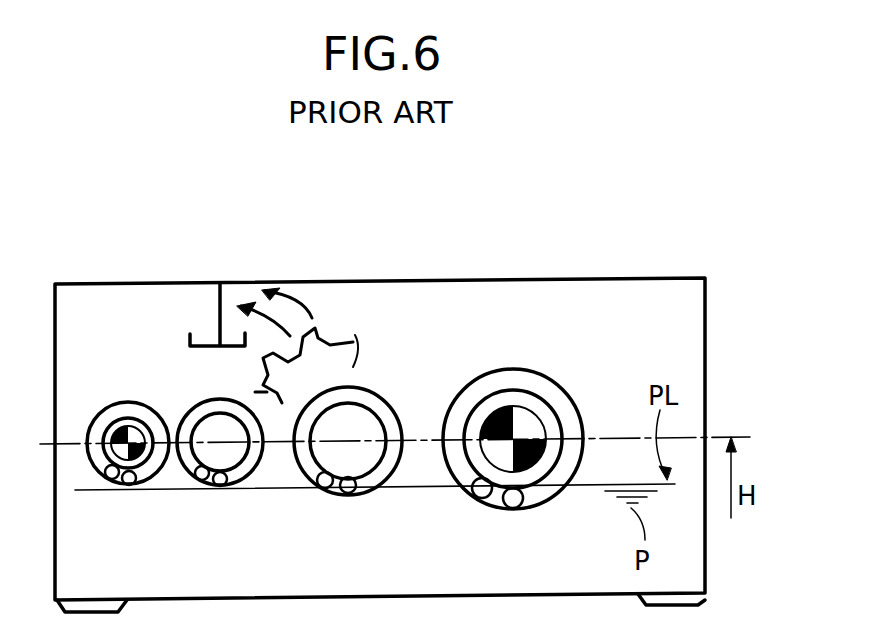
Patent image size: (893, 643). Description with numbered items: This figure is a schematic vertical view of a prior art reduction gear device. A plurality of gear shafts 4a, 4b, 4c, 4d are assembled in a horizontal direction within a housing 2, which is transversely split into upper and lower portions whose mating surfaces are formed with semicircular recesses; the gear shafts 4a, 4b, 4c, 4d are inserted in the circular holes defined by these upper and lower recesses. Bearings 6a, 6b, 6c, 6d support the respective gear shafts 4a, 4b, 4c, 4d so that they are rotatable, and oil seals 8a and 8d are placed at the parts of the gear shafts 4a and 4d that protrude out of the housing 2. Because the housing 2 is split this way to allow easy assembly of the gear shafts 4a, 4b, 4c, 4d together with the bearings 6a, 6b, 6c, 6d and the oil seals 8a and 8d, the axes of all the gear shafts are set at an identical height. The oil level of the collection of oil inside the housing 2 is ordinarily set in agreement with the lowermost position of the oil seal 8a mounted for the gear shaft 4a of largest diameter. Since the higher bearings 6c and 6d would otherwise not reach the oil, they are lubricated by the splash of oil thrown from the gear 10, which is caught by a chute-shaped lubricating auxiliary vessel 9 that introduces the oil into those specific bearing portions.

The housing 2 is at (483, 279).
The lubricating auxiliary vessel 9 is at (190, 339).
The gear 10 is at (315, 338).
The oil seal 8d is at (113, 420).
The gear shaft 4d is at (105, 470).
The bearing 6d is at (138, 482).
The gear shaft 4c is at (206, 459).
The bearing 6c is at (232, 490).
The gear shaft 4b is at (326, 455).
The bearing 6b is at (366, 492).
The oil seal 8a is at (577, 461).
The gear shaft 4a is at (503, 460).
The bearing 6a is at (518, 503).